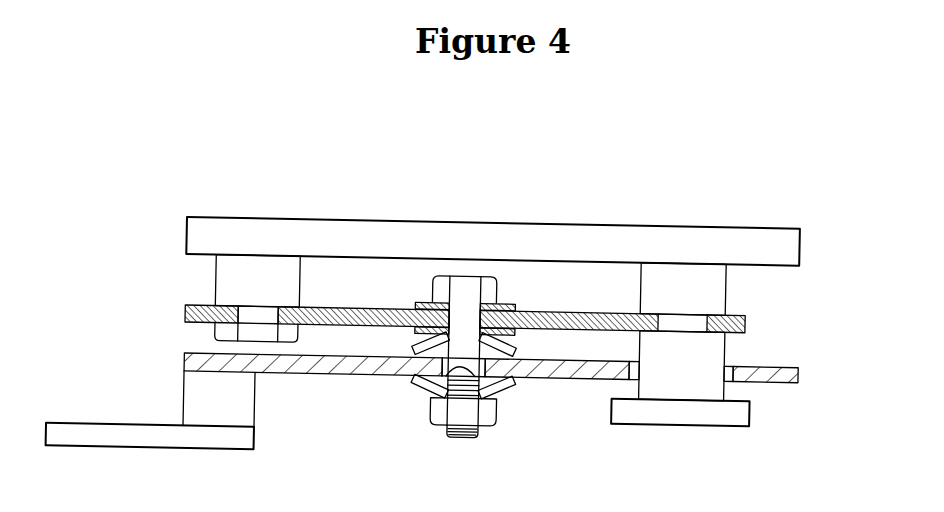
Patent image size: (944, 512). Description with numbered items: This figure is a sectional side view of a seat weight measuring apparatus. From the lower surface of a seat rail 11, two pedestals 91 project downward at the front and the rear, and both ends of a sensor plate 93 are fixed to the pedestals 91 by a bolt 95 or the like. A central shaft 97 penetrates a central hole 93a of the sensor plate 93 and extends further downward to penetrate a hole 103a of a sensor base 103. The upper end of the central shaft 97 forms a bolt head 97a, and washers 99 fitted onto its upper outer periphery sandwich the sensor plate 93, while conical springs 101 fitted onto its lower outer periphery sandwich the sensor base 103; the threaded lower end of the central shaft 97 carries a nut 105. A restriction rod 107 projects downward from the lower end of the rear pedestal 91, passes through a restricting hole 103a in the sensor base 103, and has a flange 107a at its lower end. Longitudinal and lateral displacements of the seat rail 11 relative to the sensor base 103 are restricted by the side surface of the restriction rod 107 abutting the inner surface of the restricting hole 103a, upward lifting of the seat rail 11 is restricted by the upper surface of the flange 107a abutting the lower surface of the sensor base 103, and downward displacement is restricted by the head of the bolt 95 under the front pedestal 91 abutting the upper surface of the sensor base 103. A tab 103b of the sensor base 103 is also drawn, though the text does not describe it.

The seat rail 11 is at (470, 228).
The pedestal 91 is at (288, 291).
The sensor plate 93 is at (352, 304).
The central hole 93a is at (465, 302).
The bolt 95 is at (265, 332).
The central shaft 97 is at (464, 313).
The bolt head 97a is at (489, 286).
The washers 99 is at (522, 336).
The conical springs 101 is at (525, 372).
The sensor base 103 is at (350, 361).
The hole 103a is at (727, 375).
The tab of support plate 103b is at (637, 370).
The nut 105 is at (491, 404).
The restriction rod 107 is at (708, 345).
The flange 107a is at (682, 406).